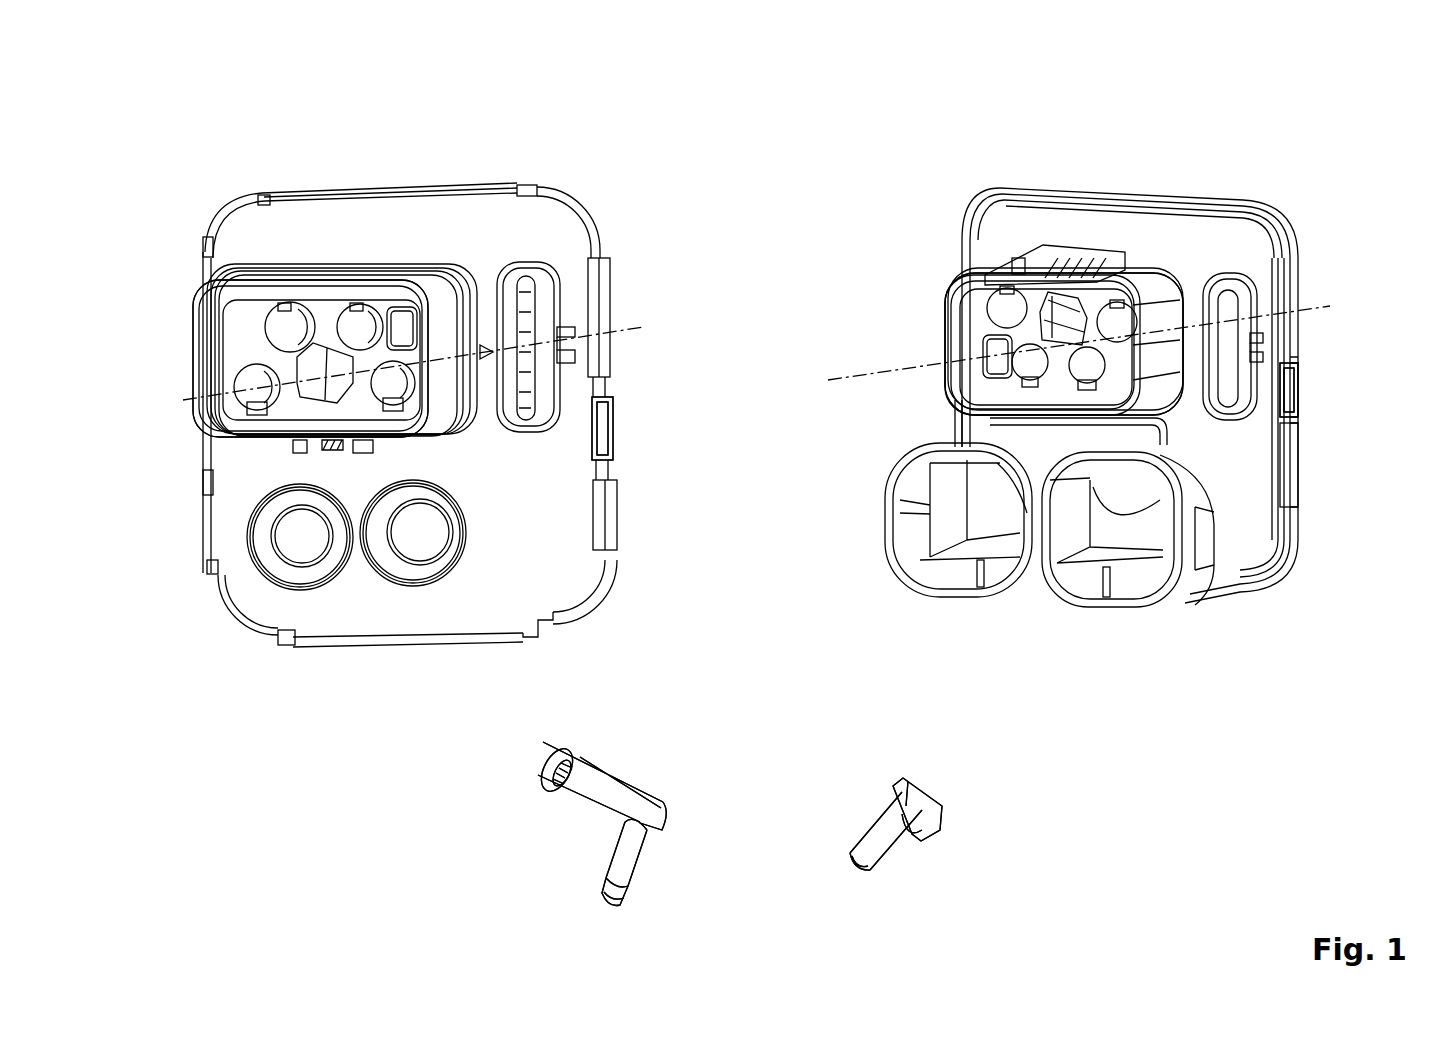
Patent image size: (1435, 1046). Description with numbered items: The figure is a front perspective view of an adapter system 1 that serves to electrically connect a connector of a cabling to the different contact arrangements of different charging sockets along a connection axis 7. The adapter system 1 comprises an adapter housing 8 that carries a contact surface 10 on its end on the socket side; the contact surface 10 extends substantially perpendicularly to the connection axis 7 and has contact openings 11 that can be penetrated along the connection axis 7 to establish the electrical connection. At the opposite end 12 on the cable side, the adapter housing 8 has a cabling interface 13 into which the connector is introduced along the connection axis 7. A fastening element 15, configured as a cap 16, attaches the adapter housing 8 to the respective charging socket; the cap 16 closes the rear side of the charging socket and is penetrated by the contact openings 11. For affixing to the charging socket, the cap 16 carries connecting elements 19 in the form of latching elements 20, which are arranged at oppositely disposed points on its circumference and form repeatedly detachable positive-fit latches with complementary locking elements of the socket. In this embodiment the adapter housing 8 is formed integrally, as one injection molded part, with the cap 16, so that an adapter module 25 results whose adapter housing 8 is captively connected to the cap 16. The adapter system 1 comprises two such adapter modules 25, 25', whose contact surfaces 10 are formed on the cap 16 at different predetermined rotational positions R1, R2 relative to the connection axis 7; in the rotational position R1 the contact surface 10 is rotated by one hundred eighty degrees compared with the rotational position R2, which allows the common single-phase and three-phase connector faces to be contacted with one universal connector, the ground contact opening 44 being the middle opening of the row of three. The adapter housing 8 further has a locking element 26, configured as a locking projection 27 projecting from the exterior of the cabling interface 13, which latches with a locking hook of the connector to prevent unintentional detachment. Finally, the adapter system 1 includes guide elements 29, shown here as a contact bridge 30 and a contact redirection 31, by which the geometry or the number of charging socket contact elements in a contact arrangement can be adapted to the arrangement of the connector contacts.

The adapter system 1 is at (833, 147).
The connection axis 7 is at (630, 327).
The adapter housing 8 is at (443, 233).
The contact surface 10 is at (260, 323).
The contact openings 11 is at (298, 305).
The end on the cable side 12 is at (190, 373).
The cabling interface 13 is at (200, 433).
The fastening element 15 is at (580, 197).
The cap 16 is at (577, 523).
The connecting elements 19 is at (627, 430).
The latching elements 20 is at (627, 430).
The adapter module 25 is at (399, 147).
The adapter module 25' is at (1121, 128).
The locking element 26 is at (263, 473).
The locking projection 27 is at (340, 443).
The guide elements 29 is at (590, 849).
The contact bridges 30 is at (590, 849).
The contact redirections 31 is at (830, 849).
The ground contact opening 44 is at (325, 370).
The rotational position R1 is at (190, 283).
The rotational position R2 is at (977, 257).